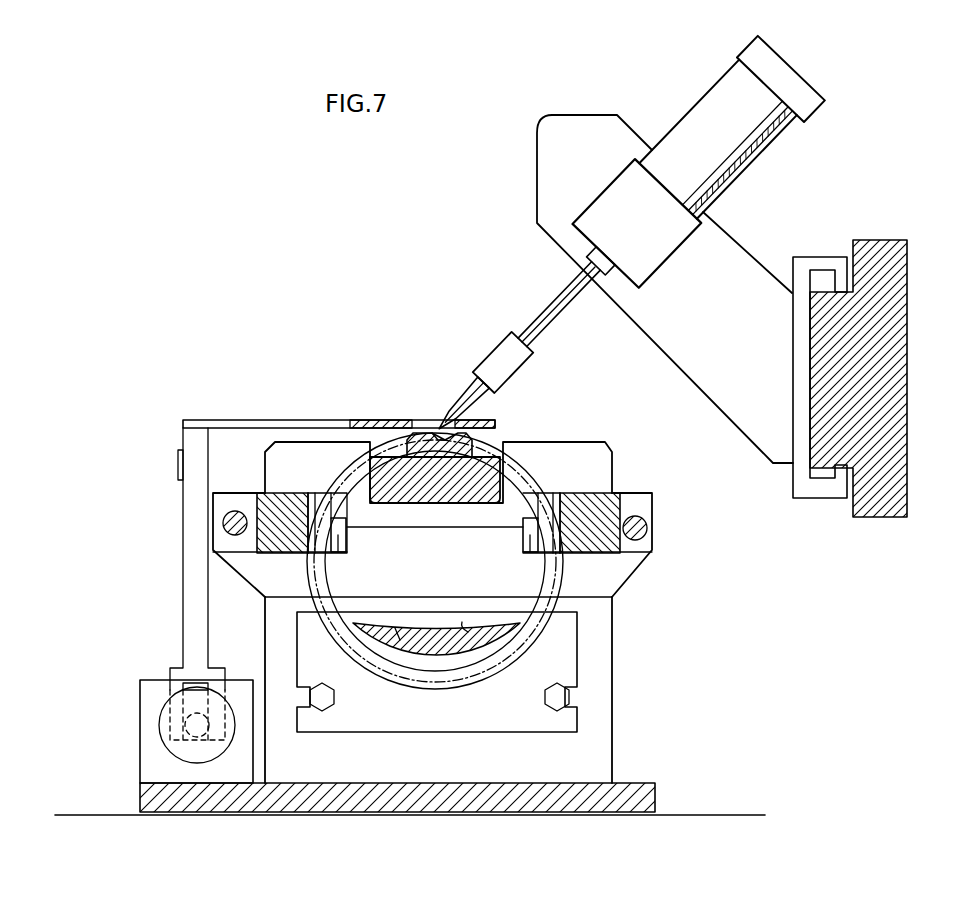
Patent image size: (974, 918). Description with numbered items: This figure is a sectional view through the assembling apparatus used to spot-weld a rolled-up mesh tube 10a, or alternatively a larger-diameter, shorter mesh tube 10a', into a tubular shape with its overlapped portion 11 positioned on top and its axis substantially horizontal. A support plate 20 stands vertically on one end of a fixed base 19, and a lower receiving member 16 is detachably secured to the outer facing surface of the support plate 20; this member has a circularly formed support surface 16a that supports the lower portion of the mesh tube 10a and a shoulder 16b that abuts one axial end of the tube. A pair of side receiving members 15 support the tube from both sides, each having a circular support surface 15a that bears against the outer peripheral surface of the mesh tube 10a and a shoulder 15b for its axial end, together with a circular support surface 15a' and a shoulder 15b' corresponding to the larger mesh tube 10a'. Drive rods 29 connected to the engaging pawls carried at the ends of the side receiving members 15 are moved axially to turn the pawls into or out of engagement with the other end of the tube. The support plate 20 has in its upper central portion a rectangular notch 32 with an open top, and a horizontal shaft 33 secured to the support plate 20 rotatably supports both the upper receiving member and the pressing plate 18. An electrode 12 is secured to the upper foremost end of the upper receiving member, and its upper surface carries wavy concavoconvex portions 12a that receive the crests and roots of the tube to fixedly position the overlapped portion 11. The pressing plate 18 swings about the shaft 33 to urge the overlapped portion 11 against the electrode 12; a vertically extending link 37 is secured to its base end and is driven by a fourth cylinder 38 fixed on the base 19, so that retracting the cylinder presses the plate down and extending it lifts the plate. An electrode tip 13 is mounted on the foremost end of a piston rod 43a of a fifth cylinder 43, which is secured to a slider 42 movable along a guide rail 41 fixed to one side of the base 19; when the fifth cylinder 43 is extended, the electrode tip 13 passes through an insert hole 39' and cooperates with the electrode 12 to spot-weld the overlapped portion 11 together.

The mesh tube 10a is at (437, 668).
The mesh tube 10a' is at (432, 519).
The overlapped portion 11 is at (478, 420).
The electrode 12 is at (462, 505).
The wavy concavoconvex portions 12a is at (425, 430).
The electrode tip 13 is at (449, 408).
The side receiving member 15 is at (260, 505).
The circular support surface 15a is at (434, 531).
The circular support surface 15a' is at (478, 499).
The shoulder 15b is at (435, 564).
The shoulder 15b' is at (440, 543).
The lower receiving member 16 is at (418, 632).
The support surface 16a is at (458, 630).
The shoulder 16b is at (430, 638).
The pressing plate 18 is at (250, 420).
The fixed base 19 is at (332, 792).
The support plate 20 is at (612, 698).
The drive rod 29 is at (226, 523).
The rectangular notch 32 is at (498, 442).
The shaft 33 is at (179, 455).
The link 37 is at (190, 567).
The fourth cylinder 38 is at (148, 735).
The insert hole 39' is at (490, 362).
The guide rail 41 is at (906, 300).
The slider 42 is at (742, 247).
The fifth cylinder 43 is at (722, 148).
The piston rod 43a is at (548, 315).